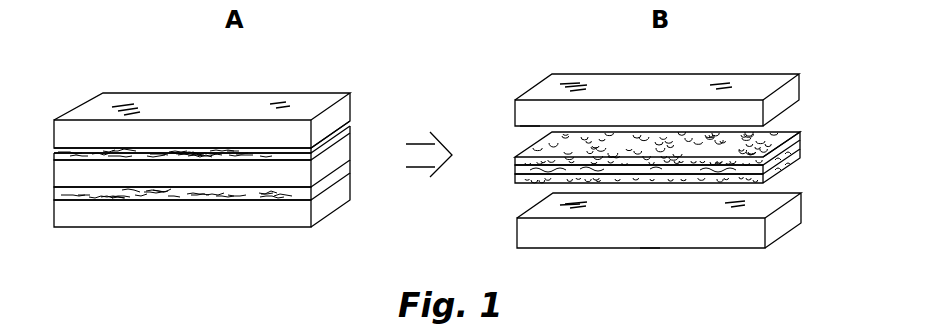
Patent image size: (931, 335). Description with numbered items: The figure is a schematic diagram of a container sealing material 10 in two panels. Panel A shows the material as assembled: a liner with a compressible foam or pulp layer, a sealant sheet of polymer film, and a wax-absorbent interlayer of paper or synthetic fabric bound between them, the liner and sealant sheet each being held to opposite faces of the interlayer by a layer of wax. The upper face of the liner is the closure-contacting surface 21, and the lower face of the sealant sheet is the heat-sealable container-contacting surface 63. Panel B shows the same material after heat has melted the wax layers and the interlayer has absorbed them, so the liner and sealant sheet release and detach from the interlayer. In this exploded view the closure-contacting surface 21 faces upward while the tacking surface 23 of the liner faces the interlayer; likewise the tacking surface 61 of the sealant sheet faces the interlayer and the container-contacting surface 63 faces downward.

The container sealing material 10 is at (337, 71).
The closure-contacting surface 21 is at (553, 86).
The tacking surface 23 is at (532, 128).
The tacking surface 61 is at (549, 207).
The container-contacting surface 63 is at (675, 248).